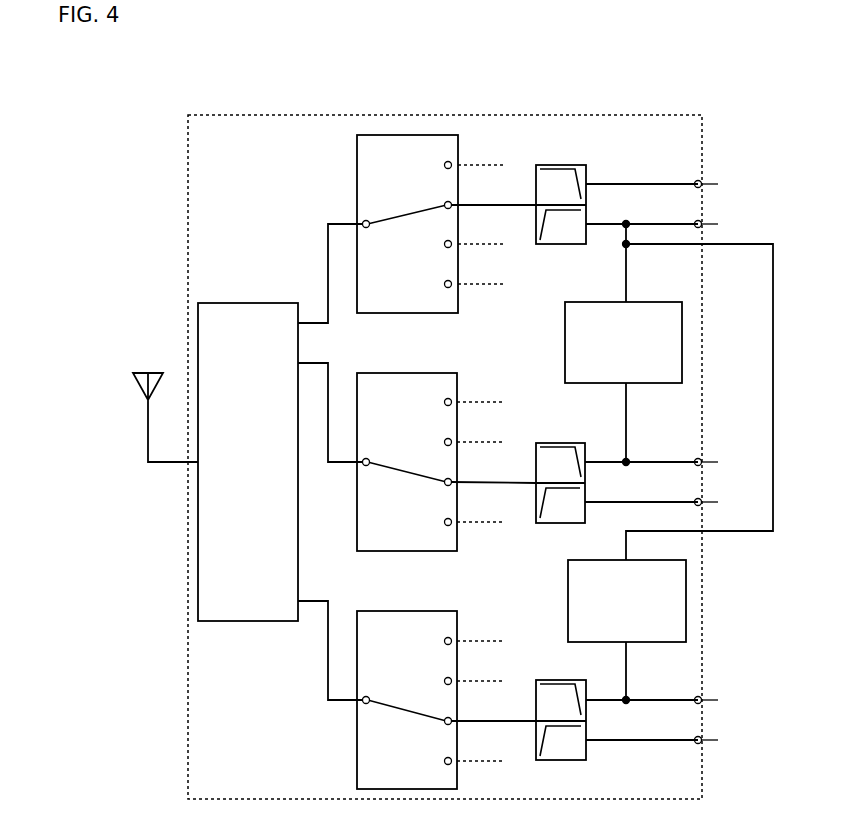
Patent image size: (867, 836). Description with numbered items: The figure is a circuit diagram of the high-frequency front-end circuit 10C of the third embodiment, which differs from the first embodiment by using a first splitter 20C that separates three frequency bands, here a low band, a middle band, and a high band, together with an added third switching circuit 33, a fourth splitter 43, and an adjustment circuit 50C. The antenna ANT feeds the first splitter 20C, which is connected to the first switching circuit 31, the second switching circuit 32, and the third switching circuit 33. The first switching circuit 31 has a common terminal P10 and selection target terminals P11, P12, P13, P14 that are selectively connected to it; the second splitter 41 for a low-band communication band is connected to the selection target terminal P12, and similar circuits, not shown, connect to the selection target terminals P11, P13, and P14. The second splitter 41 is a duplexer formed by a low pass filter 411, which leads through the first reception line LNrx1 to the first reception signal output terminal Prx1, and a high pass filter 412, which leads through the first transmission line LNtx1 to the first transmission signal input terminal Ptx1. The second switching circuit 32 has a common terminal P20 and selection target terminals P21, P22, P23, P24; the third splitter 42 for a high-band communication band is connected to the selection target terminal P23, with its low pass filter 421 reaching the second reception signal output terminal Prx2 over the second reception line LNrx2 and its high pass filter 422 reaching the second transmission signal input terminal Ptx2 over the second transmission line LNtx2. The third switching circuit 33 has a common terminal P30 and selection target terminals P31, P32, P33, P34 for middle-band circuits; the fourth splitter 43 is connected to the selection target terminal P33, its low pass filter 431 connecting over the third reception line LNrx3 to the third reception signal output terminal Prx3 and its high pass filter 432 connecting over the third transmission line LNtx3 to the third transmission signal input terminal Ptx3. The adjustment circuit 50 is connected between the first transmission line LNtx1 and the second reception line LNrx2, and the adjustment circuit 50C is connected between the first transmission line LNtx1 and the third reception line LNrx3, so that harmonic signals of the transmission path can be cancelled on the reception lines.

The high-frequency front-end circuit 10C is at (690, 115).
The first splitter 20C is at (290, 294).
The first switching circuit 31 is at (446, 215).
The second switching circuit 32 is at (446, 453).
The third switching circuit 33 is at (446, 690).
The second splitter 41 is at (557, 200).
The low pass filter 411 is at (585, 155).
The high pass filter 412 is at (577, 245).
The third splitter 42 is at (556, 477).
The low pass filter 421 is at (585, 433).
The high pass filter 422 is at (577, 524).
The fourth splitter 43 is at (557, 716).
The low pass filter 431 is at (585, 671).
The high pass filter 432 is at (577, 762).
The adjustment circuit 50 is at (667, 302).
The adjustment circuit 50C is at (567, 572).
The antenna ANT is at (141, 371).
The common terminal P10 is at (402, 211).
The selection target terminal P11 is at (460, 157).
The selection target terminal P12 is at (475, 194).
The selection target terminal P13 is at (460, 255).
The selection target terminal P14 is at (460, 294).
The common terminal P20 is at (402, 457).
The selection target terminal P21 is at (460, 394).
The selection target terminal P22 is at (460, 433).
The selection target terminal P23 is at (476, 493).
The selection target terminal P24 is at (460, 533).
The common terminal P30 is at (402, 696).
The selection target terminal P31 is at (460, 633).
The selection target terminal P32 is at (460, 671).
The selection target terminal P33 is at (475, 732).
The selection target terminal P34 is at (460, 772).
The first reception line LNrx1 is at (645, 177).
The first transmission line LNtx1 is at (653, 217).
The second reception line LNrx2 is at (652, 454).
The second transmission line LNtx2 is at (652, 494).
The third reception line LNrx3 is at (653, 692).
The third transmission line LNtx3 is at (653, 732).
The first reception signal output terminal Prx1 is at (728, 185).
The first transmission signal input terminal Ptx1 is at (728, 225).
The second reception signal output terminal Prx2 is at (729, 463).
The second transmission signal input terminal Ptx2 is at (729, 503).
The third reception signal output terminal Prx3 is at (728, 701).
The third transmission signal input terminal Ptx3 is at (728, 741).